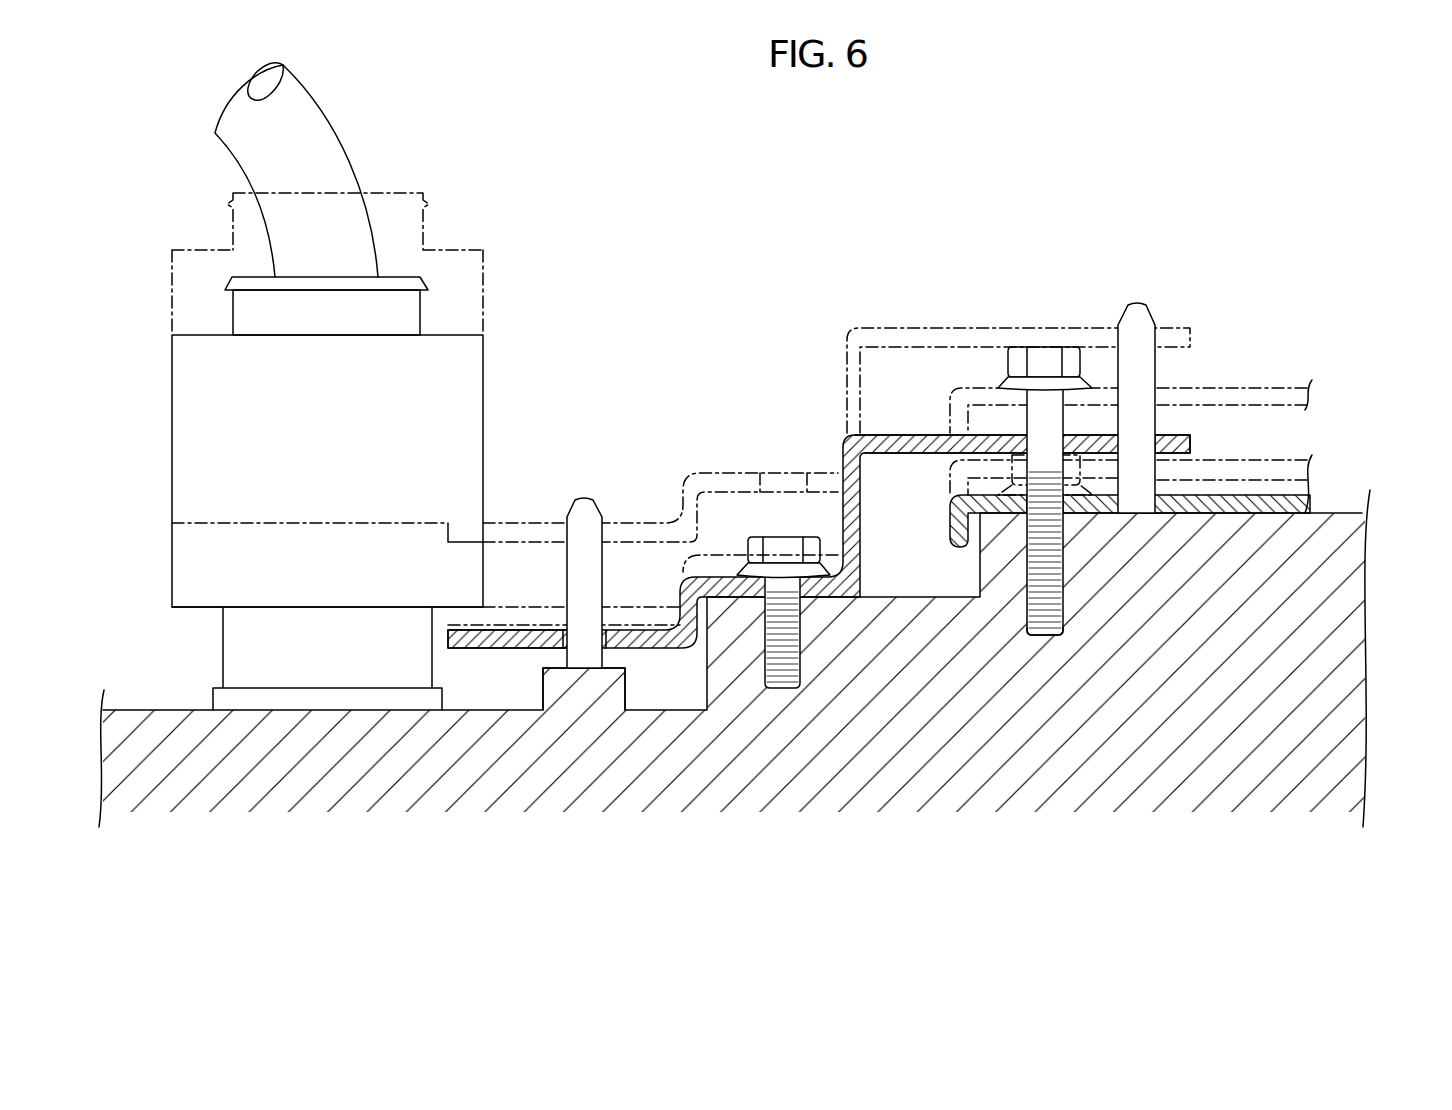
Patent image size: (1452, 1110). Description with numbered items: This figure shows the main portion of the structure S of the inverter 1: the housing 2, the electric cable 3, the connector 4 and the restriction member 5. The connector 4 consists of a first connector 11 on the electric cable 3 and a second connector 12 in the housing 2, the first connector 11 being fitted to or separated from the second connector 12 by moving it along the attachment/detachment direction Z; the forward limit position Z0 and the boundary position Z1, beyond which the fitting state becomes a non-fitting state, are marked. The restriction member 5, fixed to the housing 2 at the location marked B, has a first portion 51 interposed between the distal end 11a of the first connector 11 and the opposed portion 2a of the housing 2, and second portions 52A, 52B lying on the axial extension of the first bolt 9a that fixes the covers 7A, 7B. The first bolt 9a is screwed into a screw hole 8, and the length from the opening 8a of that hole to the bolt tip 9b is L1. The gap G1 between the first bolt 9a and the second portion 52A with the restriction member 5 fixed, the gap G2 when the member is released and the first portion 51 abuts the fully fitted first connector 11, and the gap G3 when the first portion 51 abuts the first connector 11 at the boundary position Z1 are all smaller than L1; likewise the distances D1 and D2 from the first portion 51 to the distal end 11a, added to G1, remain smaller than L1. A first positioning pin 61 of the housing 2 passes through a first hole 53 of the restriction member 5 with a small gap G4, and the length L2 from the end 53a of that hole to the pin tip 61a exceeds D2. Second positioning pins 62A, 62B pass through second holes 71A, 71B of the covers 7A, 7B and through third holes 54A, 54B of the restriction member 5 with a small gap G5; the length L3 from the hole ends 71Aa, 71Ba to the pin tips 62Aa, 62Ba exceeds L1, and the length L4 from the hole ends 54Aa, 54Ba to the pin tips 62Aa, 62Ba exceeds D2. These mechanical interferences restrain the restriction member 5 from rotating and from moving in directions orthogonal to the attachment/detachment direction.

The structure S is at (919, 120).
The inverter 1 is at (783, 270).
The housing 2 is at (734, 658).
The portion of the housing 2a is at (463, 710).
The electric cable 3 is at (318, 112).
The connector 4 is at (314, 545).
The restriction member 5 is at (859, 529).
The first connector 11 is at (314, 525).
The distal end of the first connector 11a is at (250, 523).
The second connector 12 is at (338, 672).
The first portion 51 is at (448, 637).
The second portion 52A is at (925, 409).
The bracket fixing portion 52B is at (880, 436).
The first hole 53 is at (582, 637).
The end of the first hole 53a is at (566, 672).
The third hole 54A is at (1223, 458).
The third hole 54B is at (1223, 458).
The end of the third hole 54Aa is at (1223, 458).
The end of the third hole 54Ba is at (1123, 440).
The first positioning pin 61 is at (618, 531).
The tip of the first positioning pin 61a is at (588, 500).
The second positioning pin 62A is at (1214, 359).
The second positioning pin 62B is at (1214, 359).
The tip of the second positioning pin 62Aa is at (1214, 359).
The tip of the second positioning pin 62Ba is at (1139, 306).
The cover 7A is at (1201, 522).
The cover 7B is at (1201, 522).
The second hole 71A is at (1131, 522).
The second hole 71B is at (1131, 522).
The end of the second hole 71Aa is at (1131, 522).
The end of the second hole 71Ba is at (1170, 506).
The screw hole 8 is at (1067, 543).
The opening of the screw hole 8a is at (1043, 514).
The first bolt 9a is at (1043, 636).
The tip of the first bolt 9b is at (1055, 640).
The bolt B is at (785, 545).
The vertical direction Z is at (122, 357).
The forward limit position Z0 is at (172, 607).
The boundary position Z1 is at (172, 523).
The distance D1 is at (385, 630).
The distance D2 is at (335, 523).
The length L1 is at (1027, 633).
The length L2 is at (593, 500).
The length L3 is at (1118, 305).
The length L4 is at (937, 305).
The gap G1 is at (1341, 463).
The gap G2 is at (1353, 407).
The gap G3 is at (1190, 348).
The gap G4 is at (567, 520).
The gap G5 is at (1119, 330).